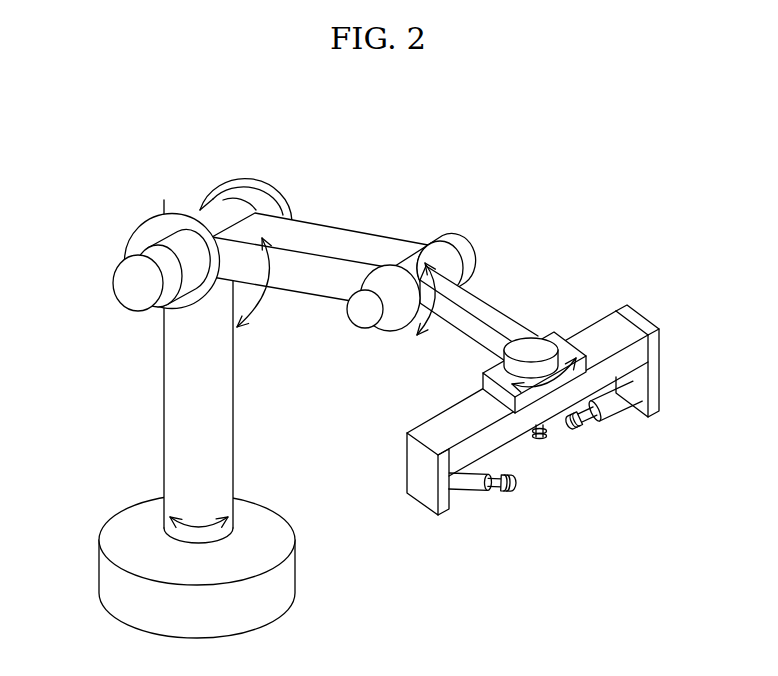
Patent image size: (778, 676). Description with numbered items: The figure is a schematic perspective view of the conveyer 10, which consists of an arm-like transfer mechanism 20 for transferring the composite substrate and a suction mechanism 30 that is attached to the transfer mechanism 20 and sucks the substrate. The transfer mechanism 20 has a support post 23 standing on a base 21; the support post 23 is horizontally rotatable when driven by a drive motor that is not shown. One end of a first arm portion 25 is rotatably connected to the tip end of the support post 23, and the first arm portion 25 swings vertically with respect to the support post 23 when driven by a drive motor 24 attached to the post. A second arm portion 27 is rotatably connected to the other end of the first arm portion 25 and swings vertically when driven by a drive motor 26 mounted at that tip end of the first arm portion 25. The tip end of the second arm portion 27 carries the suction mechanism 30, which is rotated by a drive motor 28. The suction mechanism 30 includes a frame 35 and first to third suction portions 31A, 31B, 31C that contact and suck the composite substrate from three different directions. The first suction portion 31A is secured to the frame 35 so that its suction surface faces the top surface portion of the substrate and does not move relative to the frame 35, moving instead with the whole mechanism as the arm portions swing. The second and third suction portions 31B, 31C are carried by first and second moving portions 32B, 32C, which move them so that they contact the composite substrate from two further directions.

The conveyer 10 is at (243, 135).
The arm-like transfer mechanism 20 is at (91, 250).
The base 21 is at (275, 582).
The support post 23 is at (218, 442).
The drive motor 24 is at (137, 292).
The first arm portion 25 is at (337, 243).
The drive motor 26 is at (362, 313).
The second arm portion 27 is at (490, 316).
The drive motor 28 is at (538, 347).
The suction mechanism 30 is at (620, 298).
The first suction portion 31A is at (531, 427).
The second suction portion 31B is at (513, 490).
The third suction portion 31C is at (572, 427).
The first moving portion 32B is at (472, 486).
The second moving portion 32C is at (622, 402).
The frame 35 is at (640, 333).